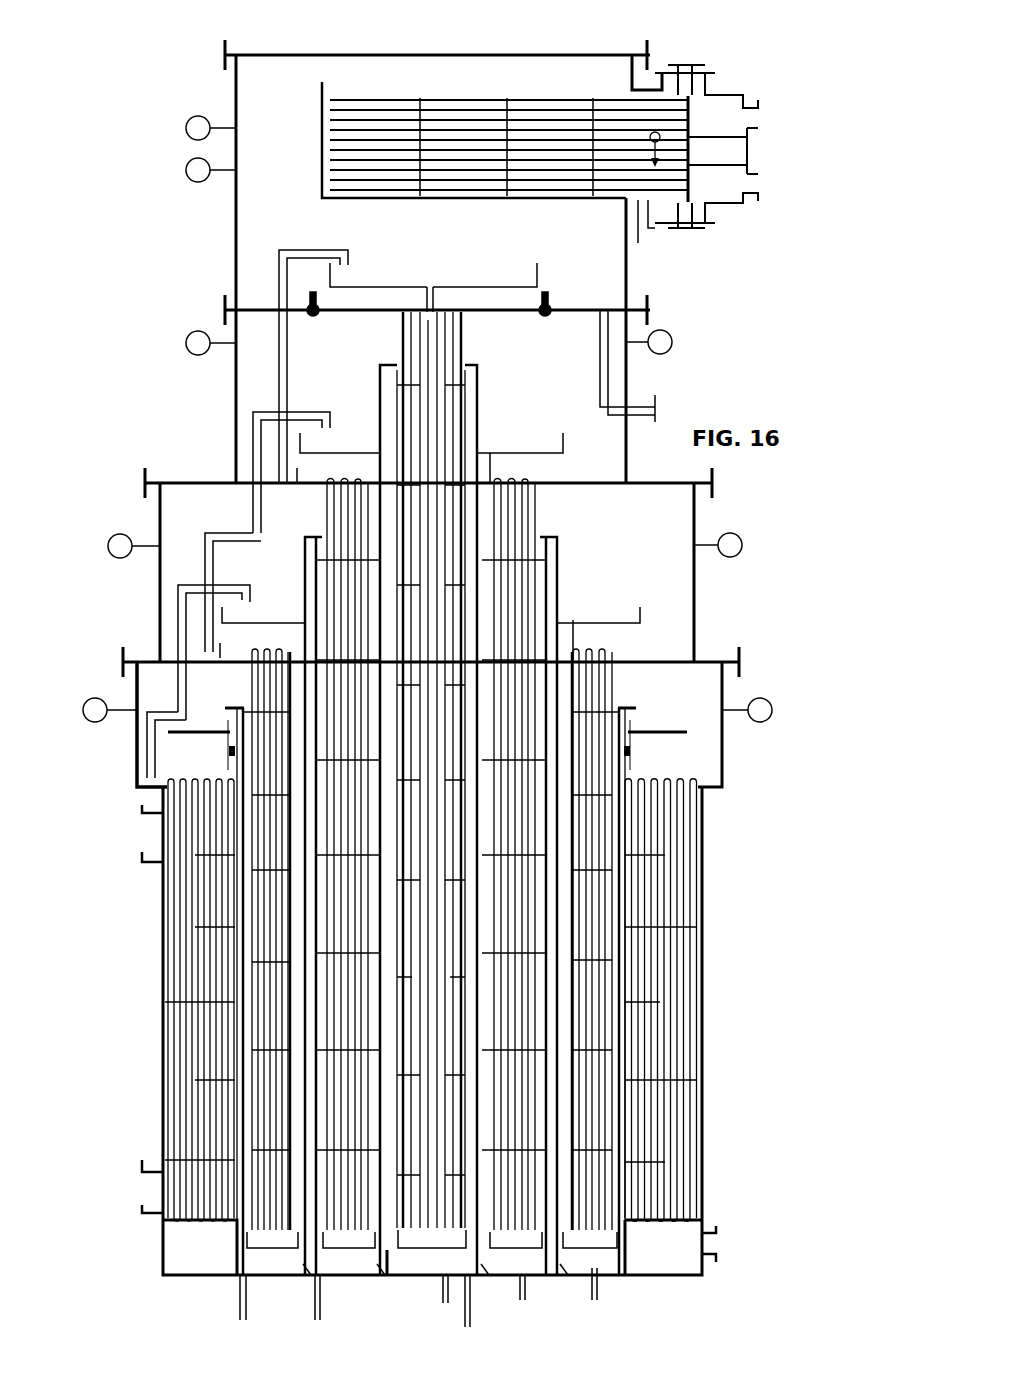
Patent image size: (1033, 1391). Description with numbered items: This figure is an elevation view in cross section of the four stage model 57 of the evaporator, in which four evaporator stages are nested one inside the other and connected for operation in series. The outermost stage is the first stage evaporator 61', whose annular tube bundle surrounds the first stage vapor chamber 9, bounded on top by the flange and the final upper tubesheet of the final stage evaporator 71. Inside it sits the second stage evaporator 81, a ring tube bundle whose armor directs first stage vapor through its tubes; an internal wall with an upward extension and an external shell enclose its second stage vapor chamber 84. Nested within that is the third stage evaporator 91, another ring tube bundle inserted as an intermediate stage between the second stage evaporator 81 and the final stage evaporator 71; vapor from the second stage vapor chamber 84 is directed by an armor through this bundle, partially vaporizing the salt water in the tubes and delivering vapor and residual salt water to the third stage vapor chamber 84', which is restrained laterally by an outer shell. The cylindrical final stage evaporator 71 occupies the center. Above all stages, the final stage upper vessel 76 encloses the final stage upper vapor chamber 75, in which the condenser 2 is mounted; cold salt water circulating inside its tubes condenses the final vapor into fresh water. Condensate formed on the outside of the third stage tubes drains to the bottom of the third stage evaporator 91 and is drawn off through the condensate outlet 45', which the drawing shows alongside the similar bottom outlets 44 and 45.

The condenser 2 is at (537, 98).
The final stage upper vessel 76 is at (236, 212).
The final stage upper vapor chamber 75 is at (278, 233).
The four stage model 57 is at (741, 273).
The final stage evaporator 71 is at (460, 342).
The third stage vapor chamber 84' is at (242, 451).
The third stage evaporator 91 is at (528, 512).
The second stage vapor chamber 84 is at (165, 669).
The first stage vapor chamber 9 is at (163, 683).
The second stage evaporator 81 is at (612, 693).
The outer tube bundles 61' is at (473, 1000).
The bottom outlet nozzle 44 is at (440, 1290).
The condensate outlet 45' is at (537, 1320).
The bottom nozzle 45 is at (621, 1306).